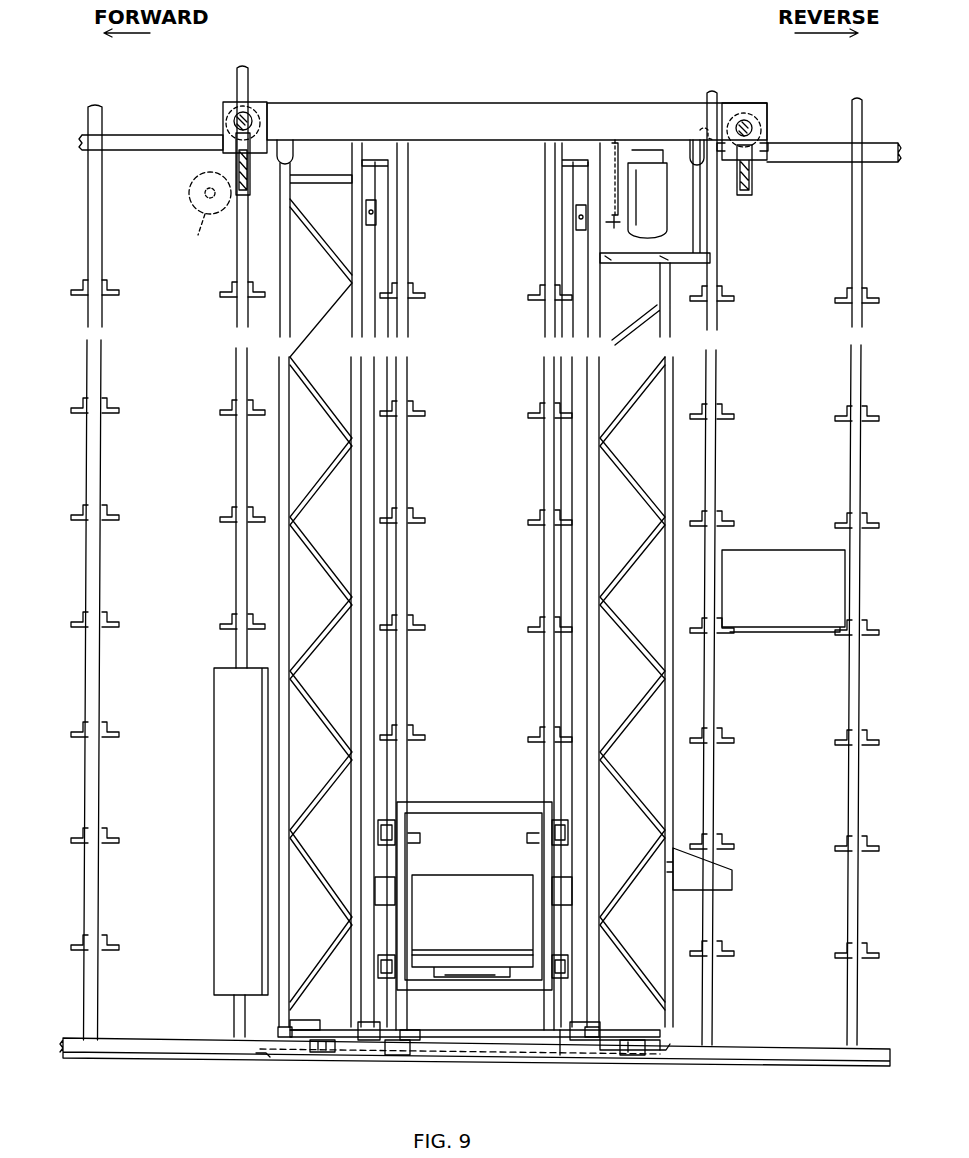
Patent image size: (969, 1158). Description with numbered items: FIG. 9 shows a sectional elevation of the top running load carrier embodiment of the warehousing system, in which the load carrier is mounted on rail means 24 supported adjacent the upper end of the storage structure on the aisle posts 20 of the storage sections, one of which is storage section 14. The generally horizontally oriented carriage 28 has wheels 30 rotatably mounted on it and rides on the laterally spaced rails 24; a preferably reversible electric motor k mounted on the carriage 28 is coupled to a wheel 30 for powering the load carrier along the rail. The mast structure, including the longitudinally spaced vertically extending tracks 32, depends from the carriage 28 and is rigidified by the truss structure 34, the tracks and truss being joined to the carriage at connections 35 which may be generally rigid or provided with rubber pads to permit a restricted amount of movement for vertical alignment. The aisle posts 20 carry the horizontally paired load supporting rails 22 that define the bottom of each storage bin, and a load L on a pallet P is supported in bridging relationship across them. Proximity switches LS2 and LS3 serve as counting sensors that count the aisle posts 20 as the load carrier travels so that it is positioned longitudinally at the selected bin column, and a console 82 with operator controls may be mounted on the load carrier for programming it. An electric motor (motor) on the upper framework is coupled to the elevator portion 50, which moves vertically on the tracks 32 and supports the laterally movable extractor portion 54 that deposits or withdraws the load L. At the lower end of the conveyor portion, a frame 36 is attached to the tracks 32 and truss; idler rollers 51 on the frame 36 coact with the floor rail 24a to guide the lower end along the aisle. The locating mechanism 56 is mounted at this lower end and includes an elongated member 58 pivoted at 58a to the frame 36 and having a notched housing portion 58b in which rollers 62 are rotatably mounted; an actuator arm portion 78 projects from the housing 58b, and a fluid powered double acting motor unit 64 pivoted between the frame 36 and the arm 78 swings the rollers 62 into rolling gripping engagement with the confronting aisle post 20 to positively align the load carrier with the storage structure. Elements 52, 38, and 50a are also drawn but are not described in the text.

The storage section 14 is at (137, 117).
The carriage 28 is at (510, 112).
The wheels 30 is at (258, 103).
The rail means 24 is at (812, 144).
The rail 24a is at (790, 1062).
The electric motor k is at (208, 216).
The aisle posts 20 is at (860, 488).
The load supporting rails 22 is at (230, 412).
The truss structure 34 is at (282, 580).
The tracks 32 is at (385, 576).
The mast guide column 52 is at (386, 232).
The proximity switch LS2 is at (373, 199).
The proximity switch LS3 is at (582, 208).
The connections 35 is at (352, 164).
The connecting member 38 is at (286, 140).
The load L is at (785, 550).
The elevator portion 50 is at (472, 800).
The extractor portion 54 is at (432, 910).
The pallet P is at (490, 952).
The carriage guide rollers 50a is at (388, 804).
The console 82 is at (722, 878).
The electric motor is at (655, 201).
The locating mechanism 56 is at (468, 1030).
The motor unit 64 is at (326, 1016).
The actuator arm portion 78 is at (368, 1060).
The rollers 62 is at (396, 1058).
The idler rollers 51 is at (322, 1058).
The housing portion 58b is at (412, 1032).
The pivot 58a is at (586, 1016).
The elongated member 58 is at (562, 1042).
The frame 36 is at (650, 1064).